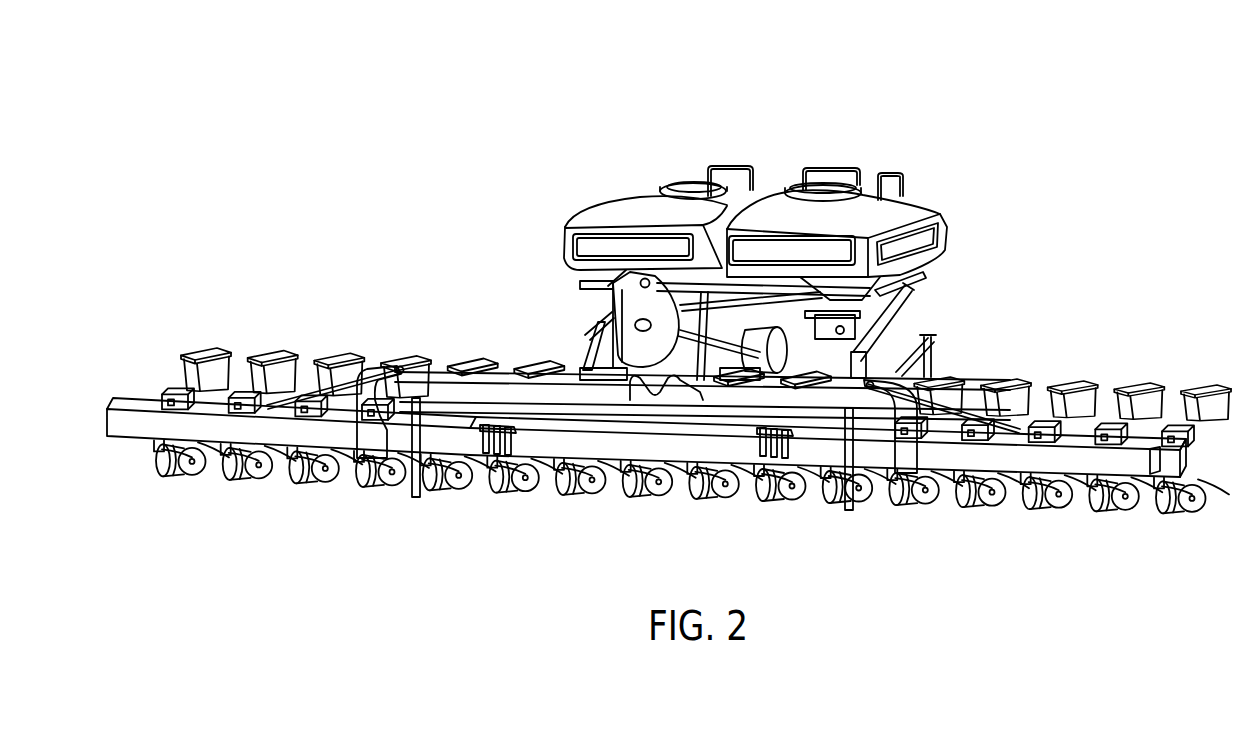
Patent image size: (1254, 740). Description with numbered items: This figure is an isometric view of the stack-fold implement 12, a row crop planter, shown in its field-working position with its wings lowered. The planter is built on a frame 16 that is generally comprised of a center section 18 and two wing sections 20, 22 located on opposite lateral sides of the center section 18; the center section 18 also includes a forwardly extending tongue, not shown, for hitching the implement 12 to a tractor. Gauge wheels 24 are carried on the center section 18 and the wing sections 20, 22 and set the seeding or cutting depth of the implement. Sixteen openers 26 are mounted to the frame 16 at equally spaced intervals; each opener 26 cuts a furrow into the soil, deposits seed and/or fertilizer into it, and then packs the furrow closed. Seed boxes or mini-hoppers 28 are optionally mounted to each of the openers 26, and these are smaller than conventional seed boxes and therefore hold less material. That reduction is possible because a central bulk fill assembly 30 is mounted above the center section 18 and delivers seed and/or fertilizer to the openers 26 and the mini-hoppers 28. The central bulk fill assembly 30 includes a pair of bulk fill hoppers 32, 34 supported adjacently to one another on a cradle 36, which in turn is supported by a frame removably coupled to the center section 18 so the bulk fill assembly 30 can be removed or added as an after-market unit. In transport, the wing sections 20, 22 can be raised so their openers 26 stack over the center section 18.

The stack-fold implement 12 is at (300, 116).
The frame 16 is at (1112, 506).
The center section 18 is at (655, 450).
The wing section 20 is at (141, 432).
The wing section 22 is at (1140, 468).
The gauge wheels 24 is at (325, 472).
The openers 26 is at (437, 502).
The mini-hoppers 28 is at (270, 360).
The central bulk fill assembly 30 is at (952, 170).
The bulk fill hopper 32 is at (918, 221).
The bulk fill hopper 34 is at (618, 207).
The cradle 36 is at (908, 288).